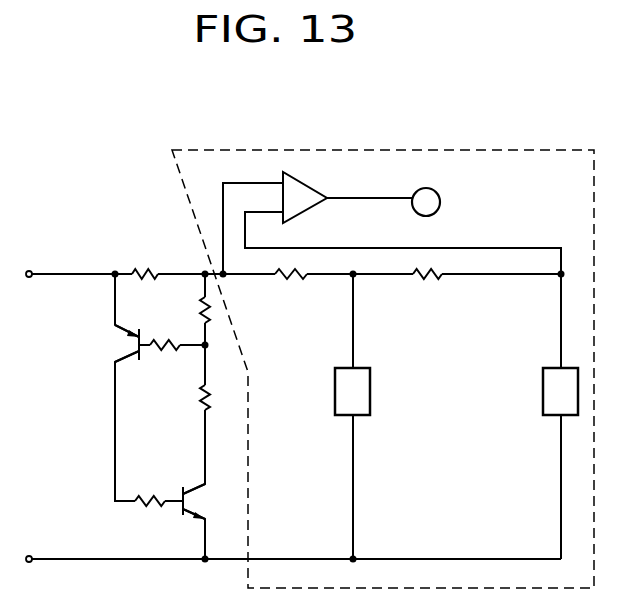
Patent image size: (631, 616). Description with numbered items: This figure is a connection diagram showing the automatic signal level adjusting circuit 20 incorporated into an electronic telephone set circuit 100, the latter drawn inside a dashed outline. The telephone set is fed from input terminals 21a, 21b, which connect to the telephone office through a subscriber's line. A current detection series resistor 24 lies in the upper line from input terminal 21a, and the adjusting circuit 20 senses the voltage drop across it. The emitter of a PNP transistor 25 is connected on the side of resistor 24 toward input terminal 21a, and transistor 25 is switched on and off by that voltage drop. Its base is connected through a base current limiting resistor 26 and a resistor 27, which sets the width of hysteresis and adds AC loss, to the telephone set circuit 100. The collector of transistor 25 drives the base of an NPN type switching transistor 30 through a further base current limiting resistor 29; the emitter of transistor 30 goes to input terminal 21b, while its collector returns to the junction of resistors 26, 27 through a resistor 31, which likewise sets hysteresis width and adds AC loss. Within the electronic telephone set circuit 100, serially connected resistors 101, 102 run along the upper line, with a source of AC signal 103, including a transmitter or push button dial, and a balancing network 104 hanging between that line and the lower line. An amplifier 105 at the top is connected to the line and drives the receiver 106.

The automatic signal level adjusting circuit 20 is at (108, 412).
The input terminal 21a is at (29, 271).
The input terminal 21b is at (29, 556).
The current detection series resistor 24 is at (145, 261).
The PNP transistor 25 is at (117, 343).
The base current limiting resistor 26 is at (166, 361).
The resistor for setting the width of hysteresis and adding AC loss 27 is at (194, 312).
The base current limiting resistor 29 is at (150, 488).
The NPN type switching transistor 30 is at (205, 501).
The resistor for setting the width of hysteresis and adding AC loss 31 is at (216, 400).
The electronic telephone set circuit 100 is at (222, 150).
The resistor 101 is at (291, 289).
The resistor 102 is at (427, 289).
The source of AC signal 103 is at (370, 393).
The balancing network 104 is at (543, 393).
The amplifier 105 is at (306, 190).
The receiver 106 is at (440, 202).